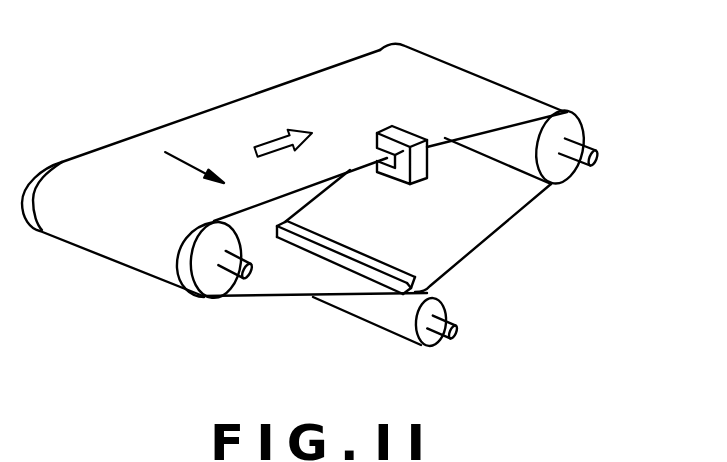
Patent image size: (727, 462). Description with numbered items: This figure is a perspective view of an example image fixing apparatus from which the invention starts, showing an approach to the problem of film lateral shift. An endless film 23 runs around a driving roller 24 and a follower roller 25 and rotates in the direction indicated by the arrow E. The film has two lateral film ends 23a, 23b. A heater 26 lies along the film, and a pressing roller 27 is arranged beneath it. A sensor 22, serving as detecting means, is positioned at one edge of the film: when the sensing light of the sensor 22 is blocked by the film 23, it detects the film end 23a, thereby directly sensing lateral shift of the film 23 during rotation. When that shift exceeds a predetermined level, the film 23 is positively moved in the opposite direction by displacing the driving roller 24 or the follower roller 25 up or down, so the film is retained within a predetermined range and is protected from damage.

The sensor 22 is at (405, 133).
The endless film 23 is at (227, 123).
The film end 23a is at (517, 110).
The film end 23b is at (118, 141).
The driving roller 24 is at (206, 288).
The follower roller 25 is at (571, 124).
The heater 26 is at (367, 262).
The pressing roller 27 is at (360, 308).